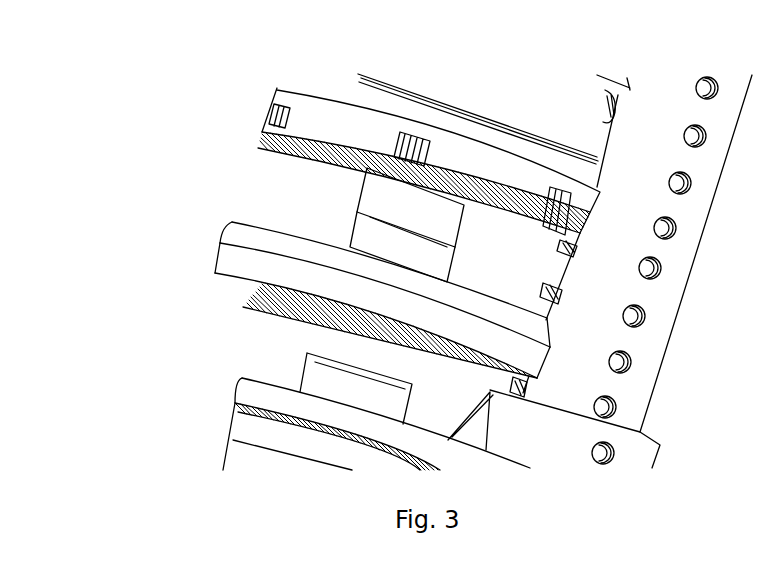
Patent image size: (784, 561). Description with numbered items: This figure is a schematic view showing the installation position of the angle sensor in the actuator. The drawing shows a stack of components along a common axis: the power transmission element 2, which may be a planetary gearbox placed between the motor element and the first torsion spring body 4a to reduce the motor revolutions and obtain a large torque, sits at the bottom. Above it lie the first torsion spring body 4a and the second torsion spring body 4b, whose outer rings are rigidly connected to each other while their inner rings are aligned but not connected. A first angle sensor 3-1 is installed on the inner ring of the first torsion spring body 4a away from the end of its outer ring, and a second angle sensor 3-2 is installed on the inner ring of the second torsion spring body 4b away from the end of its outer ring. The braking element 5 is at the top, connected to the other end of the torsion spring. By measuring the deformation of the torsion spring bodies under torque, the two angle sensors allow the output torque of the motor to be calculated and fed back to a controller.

The power transmission element 2 is at (267, 470).
The first angle sensor 3-1 is at (320, 382).
The second angle sensor 3-2 is at (377, 200).
The first torsion spring body 4a is at (240, 262).
The second torsion spring body 4b is at (253, 235).
The braking element 5 is at (300, 122).